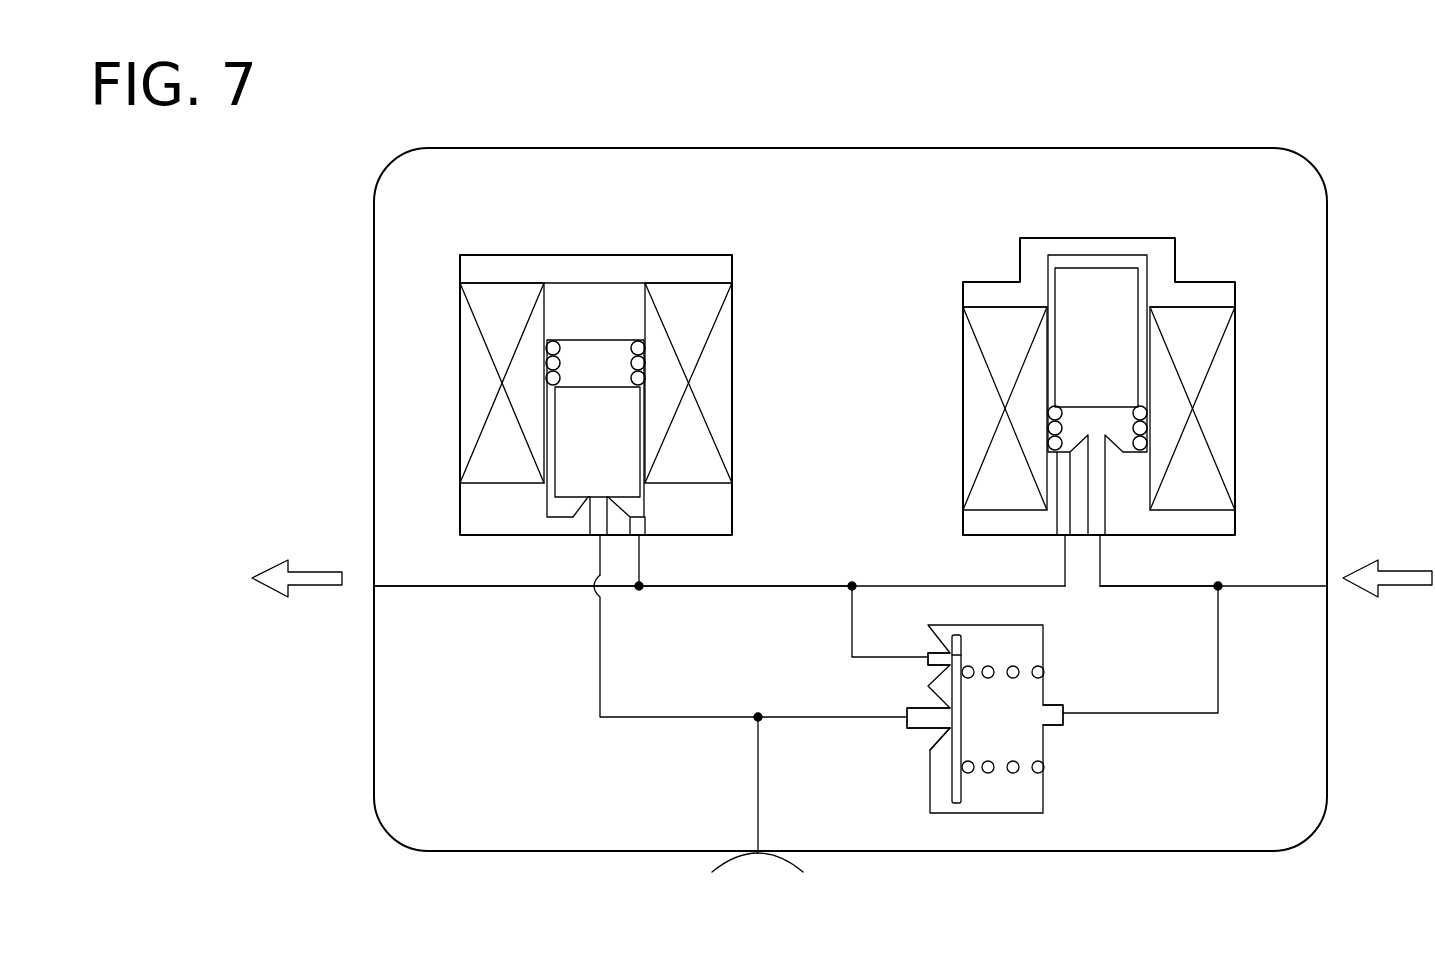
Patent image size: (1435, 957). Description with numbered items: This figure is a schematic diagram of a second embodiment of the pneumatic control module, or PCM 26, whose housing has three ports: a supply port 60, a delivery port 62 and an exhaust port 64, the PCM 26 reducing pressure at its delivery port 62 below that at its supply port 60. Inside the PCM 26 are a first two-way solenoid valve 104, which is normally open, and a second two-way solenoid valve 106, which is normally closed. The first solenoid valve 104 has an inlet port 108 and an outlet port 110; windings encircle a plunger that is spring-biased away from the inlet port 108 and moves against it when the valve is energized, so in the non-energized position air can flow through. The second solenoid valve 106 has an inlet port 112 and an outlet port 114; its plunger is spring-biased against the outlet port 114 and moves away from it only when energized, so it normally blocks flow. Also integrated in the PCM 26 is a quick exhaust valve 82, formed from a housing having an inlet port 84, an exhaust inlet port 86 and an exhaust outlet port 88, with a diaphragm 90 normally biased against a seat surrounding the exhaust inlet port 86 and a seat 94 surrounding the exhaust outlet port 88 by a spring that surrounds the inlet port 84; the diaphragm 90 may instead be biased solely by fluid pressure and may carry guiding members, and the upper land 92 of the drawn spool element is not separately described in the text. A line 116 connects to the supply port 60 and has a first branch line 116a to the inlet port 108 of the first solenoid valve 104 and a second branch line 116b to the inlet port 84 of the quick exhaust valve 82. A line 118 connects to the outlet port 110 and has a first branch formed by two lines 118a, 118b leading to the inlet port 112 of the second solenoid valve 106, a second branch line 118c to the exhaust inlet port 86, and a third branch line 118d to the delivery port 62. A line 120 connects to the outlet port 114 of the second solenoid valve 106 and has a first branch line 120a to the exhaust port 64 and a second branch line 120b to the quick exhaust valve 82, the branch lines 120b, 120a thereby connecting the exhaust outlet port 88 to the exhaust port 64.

The pneumatic control module 26 is at (676, 149).
The supply port 60 is at (1328, 588).
The delivery port 62 is at (372, 587).
The exhaust port 64 is at (757, 858).
The quick exhaust valve 82 is at (1003, 814).
The inlet port 84 is at (1063, 716).
The exhaust inlet port 86 is at (928, 653).
The exhaust outlet port 88 is at (907, 710).
The diaphragm 90 is at (956, 805).
The spool land 92 is at (960, 645).
The seat 94 is at (950, 727).
The first 2-way solenoid valve 104 is at (1205, 282).
The second 2-way solenoid valve 106 is at (655, 254).
The inlet port 108 is at (1106, 540).
The outlet port 110 is at (1060, 537).
The inlet port 112 is at (641, 540).
The outlet port 114 is at (590, 541).
The line 116 is at (1280, 588).
The first branch line 116a is at (1160, 588).
The second branch line 116b is at (1220, 696).
The line 118 is at (915, 585).
The line 118a is at (760, 585).
The line 118b is at (637, 589).
The second branch line 118c is at (850, 637).
The third branch line 118d is at (432, 588).
The line 120 is at (600, 678).
The first branch line 120a is at (757, 776).
The second branch line 120b is at (823, 701).